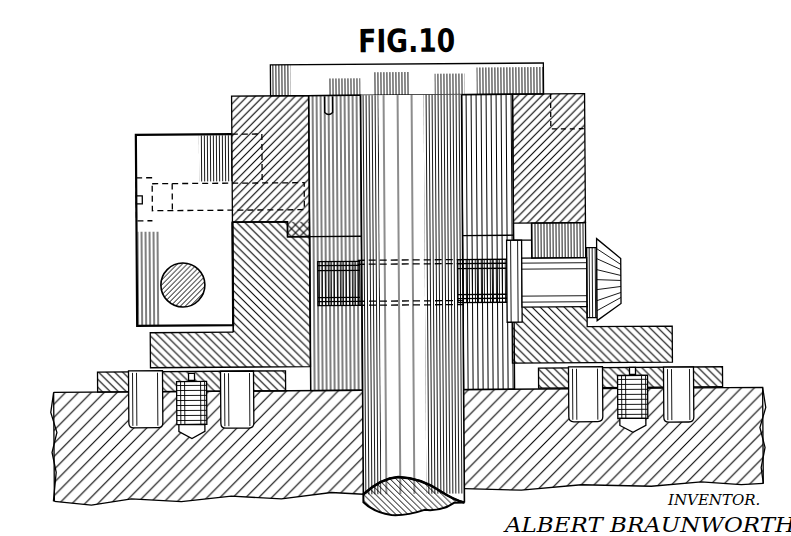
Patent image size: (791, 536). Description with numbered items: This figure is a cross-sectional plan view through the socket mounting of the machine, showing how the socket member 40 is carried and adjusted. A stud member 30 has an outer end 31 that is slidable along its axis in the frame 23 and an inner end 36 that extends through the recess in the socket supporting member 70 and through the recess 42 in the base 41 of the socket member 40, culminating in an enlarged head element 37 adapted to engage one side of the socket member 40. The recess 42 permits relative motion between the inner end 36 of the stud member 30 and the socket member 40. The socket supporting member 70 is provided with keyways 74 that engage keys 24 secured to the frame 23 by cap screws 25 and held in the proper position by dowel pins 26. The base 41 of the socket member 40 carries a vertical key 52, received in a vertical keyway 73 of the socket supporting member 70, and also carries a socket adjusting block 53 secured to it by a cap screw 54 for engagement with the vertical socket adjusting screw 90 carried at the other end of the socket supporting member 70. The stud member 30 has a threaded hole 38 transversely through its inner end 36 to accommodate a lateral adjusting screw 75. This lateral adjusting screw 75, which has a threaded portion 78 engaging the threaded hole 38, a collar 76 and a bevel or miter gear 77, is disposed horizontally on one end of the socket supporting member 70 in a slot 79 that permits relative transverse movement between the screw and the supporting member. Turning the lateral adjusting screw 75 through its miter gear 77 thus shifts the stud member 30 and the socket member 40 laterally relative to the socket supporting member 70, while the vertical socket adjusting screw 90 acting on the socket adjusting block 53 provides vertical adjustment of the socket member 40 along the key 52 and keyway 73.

The frame 23 is at (737, 392).
The keys 24 is at (100, 380).
The cap screws 25 is at (200, 432).
The dowel pins 26 is at (138, 375).
The stud member 30 is at (418, 357).
The outer end 31 is at (375, 500).
The inner end 36 is at (462, 143).
The enlarged head element 37 is at (272, 78).
The threaded hole 38 is at (389, 258).
The socket member 40 is at (590, 104).
The base 41 is at (575, 140).
The recess 42 is at (332, 108).
The vertical key 52 is at (518, 240).
The socket adjusting block 53 is at (140, 148).
The cap screw 54 is at (137, 180).
The socket supporting member 70 is at (150, 333).
The vertical keyway 73 is at (549, 241).
The keyways 74 is at (295, 366).
The lateral adjusting screw 75 is at (469, 306).
The collar 76 is at (522, 278).
The miter gear 77 is at (616, 252).
The threaded portion 78 is at (336, 306).
The slot 79 is at (575, 228).
The vertical socket adjusting screw 90 is at (160, 283).